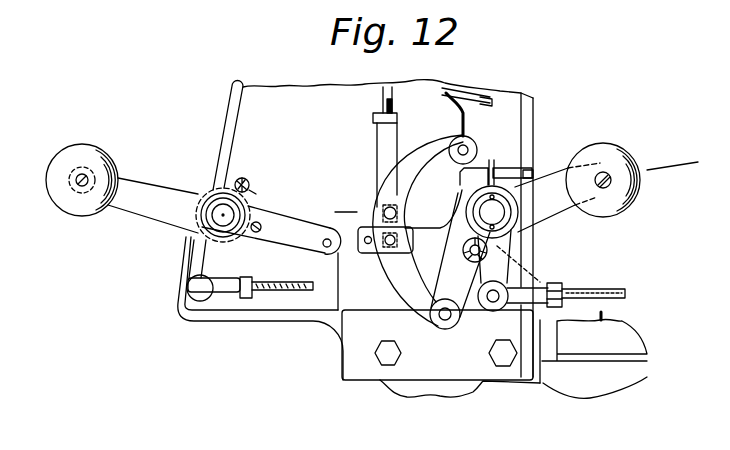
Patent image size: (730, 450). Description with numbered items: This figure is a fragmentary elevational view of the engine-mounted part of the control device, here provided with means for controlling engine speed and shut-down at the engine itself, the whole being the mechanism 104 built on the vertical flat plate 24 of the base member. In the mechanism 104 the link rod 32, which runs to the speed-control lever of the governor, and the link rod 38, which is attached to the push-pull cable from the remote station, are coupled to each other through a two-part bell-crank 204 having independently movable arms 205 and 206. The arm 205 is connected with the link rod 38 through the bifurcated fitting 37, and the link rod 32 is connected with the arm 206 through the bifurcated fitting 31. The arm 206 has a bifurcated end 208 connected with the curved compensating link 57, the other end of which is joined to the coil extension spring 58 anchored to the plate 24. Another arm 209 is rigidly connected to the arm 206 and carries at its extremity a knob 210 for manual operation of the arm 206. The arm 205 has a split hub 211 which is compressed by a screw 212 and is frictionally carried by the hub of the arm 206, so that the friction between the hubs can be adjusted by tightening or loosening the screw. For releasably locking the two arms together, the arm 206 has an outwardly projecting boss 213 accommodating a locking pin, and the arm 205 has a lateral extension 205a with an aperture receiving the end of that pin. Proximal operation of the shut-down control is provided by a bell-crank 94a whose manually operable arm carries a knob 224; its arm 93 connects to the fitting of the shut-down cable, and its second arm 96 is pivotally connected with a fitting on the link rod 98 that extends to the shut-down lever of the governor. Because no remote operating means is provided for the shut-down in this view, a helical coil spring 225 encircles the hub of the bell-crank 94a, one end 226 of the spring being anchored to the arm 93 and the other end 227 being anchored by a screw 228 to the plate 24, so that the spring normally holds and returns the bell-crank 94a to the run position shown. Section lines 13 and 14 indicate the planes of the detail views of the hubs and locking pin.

The section line 13 is at (346, 212).
The section line 14 is at (426, 227).
The vertical flat plate 24 is at (260, 108).
The bifurcated fitting 31 is at (537, 292).
The link rod 32 is at (592, 288).
The bifurcated fitting 37 is at (380, 148).
The link rod 38 is at (380, 101).
The curved compensating link 57 is at (397, 277).
The coil extension spring 58 is at (471, 126).
The arm of bell-crank 93 is at (303, 248).
The bell-crank 94a is at (273, 188).
The second arm of bell-crank 96 is at (203, 257).
The link rod 98 is at (277, 288).
The mechanism 104 is at (288, 347).
The two-part bell-crank 204 is at (452, 207).
The bell-crank arm 205 is at (433, 247).
The lateral extension 205a is at (521, 267).
The bell-crank arm 206 is at (472, 311).
The bifurcated end 208 is at (445, 328).
The arm 209 is at (552, 208).
The knob 210 is at (633, 203).
The split hub 211 is at (500, 168).
The screw 212 is at (530, 172).
The boss 213 is at (478, 262).
The knob 224 is at (85, 213).
The helical coil spring 225 is at (217, 192).
The spring end 226 is at (250, 230).
The spring end 227 is at (252, 191).
The screw 228 is at (242, 178).